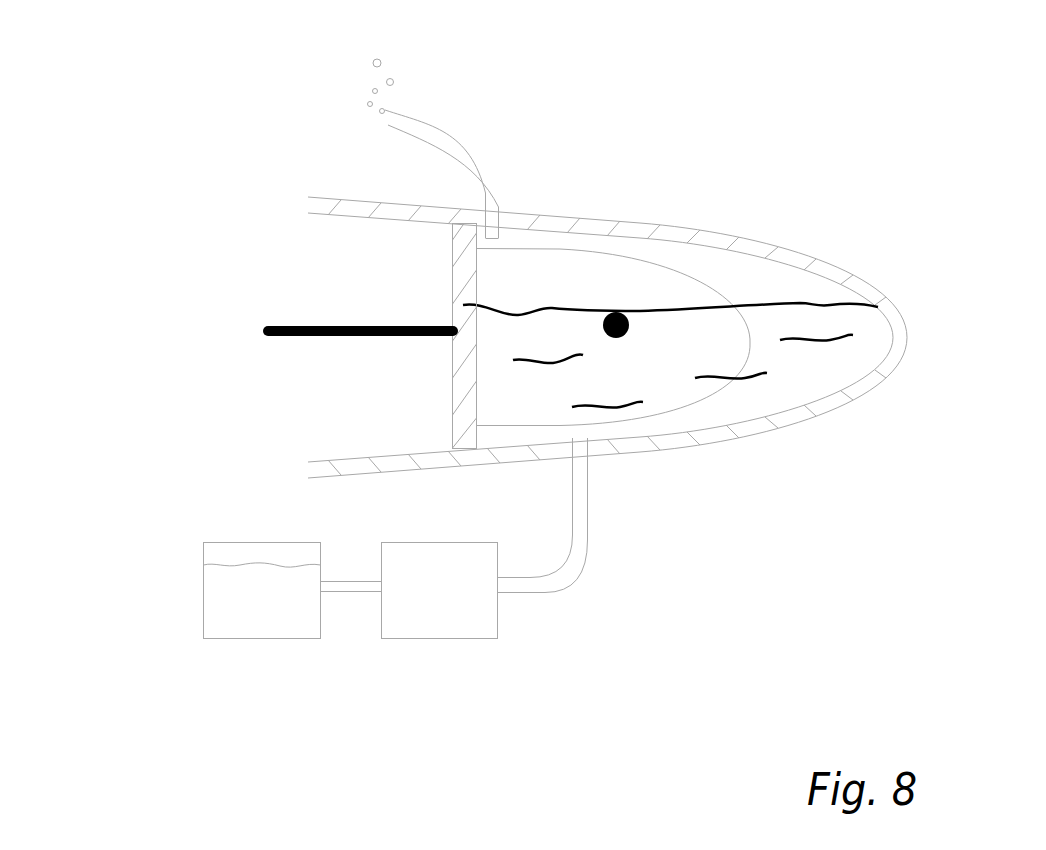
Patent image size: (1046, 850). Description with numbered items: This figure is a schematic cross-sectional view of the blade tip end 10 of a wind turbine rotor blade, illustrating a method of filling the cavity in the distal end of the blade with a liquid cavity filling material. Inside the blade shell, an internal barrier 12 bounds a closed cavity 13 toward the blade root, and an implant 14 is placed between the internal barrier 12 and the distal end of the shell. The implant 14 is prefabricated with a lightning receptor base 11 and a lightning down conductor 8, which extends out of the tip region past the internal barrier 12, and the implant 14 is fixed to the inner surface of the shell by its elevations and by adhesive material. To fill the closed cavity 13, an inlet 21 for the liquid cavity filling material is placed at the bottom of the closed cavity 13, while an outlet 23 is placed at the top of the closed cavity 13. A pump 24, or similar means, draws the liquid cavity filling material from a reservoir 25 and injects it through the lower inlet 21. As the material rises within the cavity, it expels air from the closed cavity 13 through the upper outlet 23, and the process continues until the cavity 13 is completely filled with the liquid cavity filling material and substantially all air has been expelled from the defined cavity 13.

The lightning down conductor 8 is at (357, 326).
The blade tip end 10 is at (762, 243).
The lightning receptor base 11 is at (606, 314).
The internal barrier 12 is at (455, 385).
The closed cavity 13 is at (817, 292).
The implant 14 is at (657, 283).
The inlet 21 is at (587, 472).
The outlet 23 is at (427, 127).
The pump 24 is at (497, 620).
The reservoir 25 is at (203, 607).